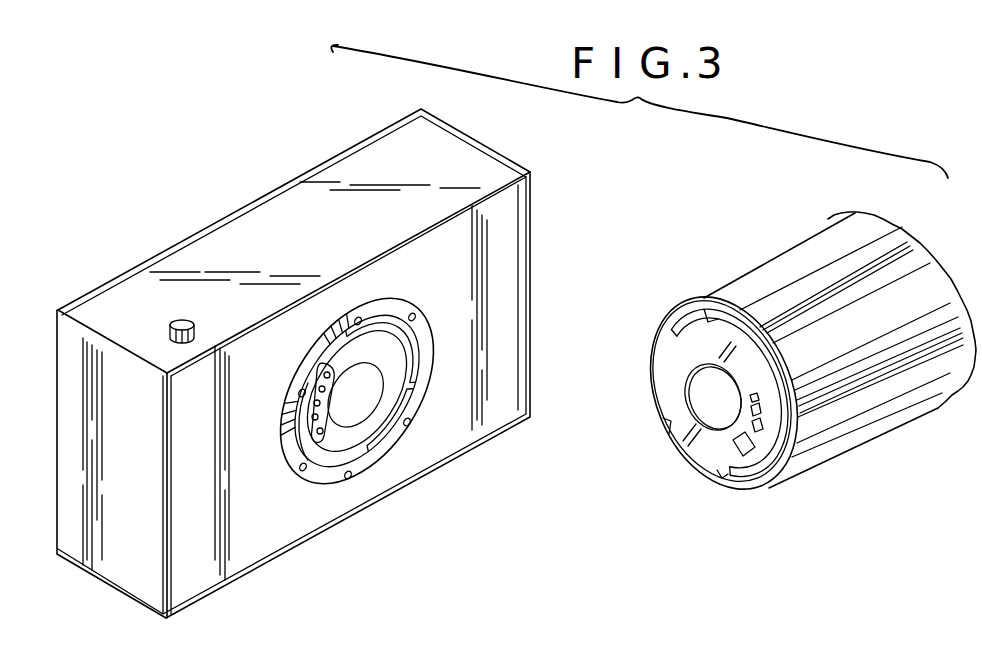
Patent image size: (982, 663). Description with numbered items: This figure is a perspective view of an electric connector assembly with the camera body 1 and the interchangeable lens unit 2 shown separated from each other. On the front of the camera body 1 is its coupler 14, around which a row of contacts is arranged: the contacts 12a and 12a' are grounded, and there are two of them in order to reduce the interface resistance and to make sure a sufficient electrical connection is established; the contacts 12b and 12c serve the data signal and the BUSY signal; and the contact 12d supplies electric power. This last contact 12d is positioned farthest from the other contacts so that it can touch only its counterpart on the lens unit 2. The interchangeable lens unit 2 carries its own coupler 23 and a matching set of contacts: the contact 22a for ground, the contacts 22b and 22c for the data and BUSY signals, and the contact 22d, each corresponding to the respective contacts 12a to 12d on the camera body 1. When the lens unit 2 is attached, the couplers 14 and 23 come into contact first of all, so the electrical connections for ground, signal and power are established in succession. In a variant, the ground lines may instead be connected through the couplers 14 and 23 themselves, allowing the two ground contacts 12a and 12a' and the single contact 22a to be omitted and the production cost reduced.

The camera body 1 is at (513, 246).
The interchangeable lens unit 2 is at (792, 255).
The coupler 14 is at (428, 338).
The contact 12a is at (313, 444).
The contact 12a' is at (277, 437).
The contact 12b is at (313, 406).
The contact 12c is at (318, 386).
The contact 12d is at (325, 372).
The contact 22a is at (745, 457).
The contact 22b is at (757, 434).
The contact 22c is at (758, 416).
The contact 22d is at (760, 399).
The coupler 23 is at (670, 389).